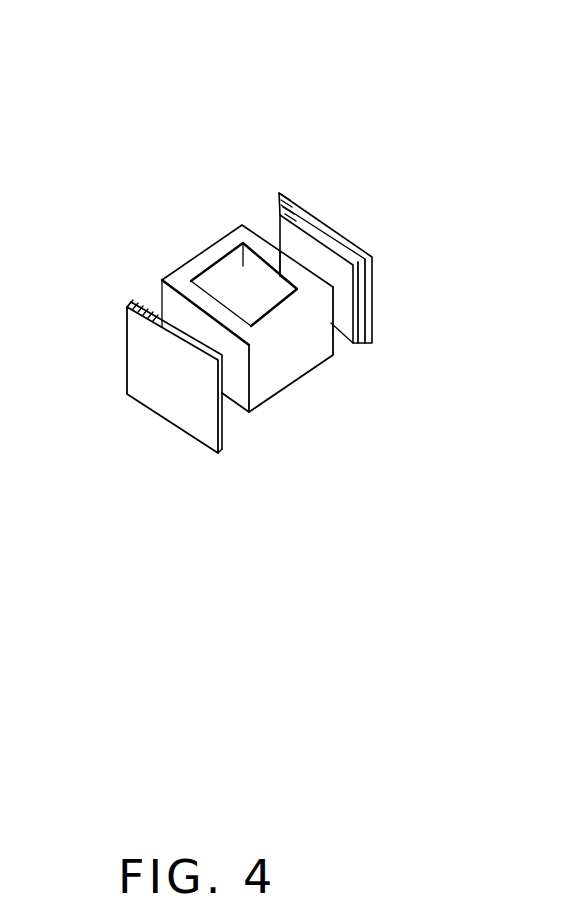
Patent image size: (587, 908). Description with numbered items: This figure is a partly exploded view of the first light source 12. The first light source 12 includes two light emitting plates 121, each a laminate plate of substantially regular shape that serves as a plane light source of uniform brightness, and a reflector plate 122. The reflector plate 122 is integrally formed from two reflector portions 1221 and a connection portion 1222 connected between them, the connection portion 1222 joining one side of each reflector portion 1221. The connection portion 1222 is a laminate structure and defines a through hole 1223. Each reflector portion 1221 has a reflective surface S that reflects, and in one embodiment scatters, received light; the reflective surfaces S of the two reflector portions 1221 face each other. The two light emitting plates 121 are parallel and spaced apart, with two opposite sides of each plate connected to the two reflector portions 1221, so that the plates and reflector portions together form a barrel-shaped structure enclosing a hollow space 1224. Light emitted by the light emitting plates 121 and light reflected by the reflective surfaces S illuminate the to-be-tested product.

The first light source 12 is at (260, 37).
The light emitting plate 121 is at (181, 412).
The reflector plate 122 is at (201, 253).
The reflector portion 1221 is at (287, 343).
The connection portion 1222 is at (295, 271).
The through hole 1223 is at (255, 252).
The hollow space 1224 is at (234, 398).
The reflective surface S is at (360, 326).